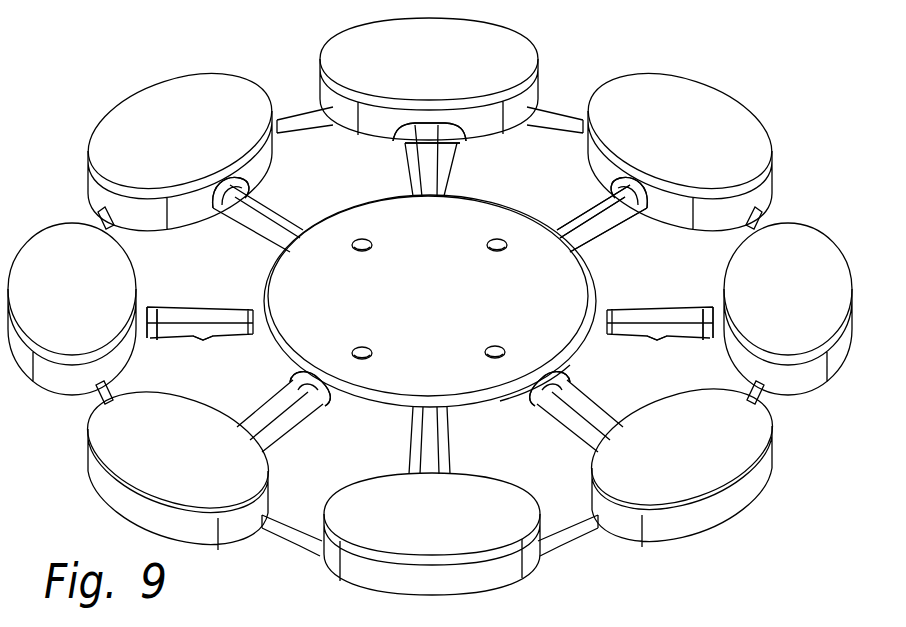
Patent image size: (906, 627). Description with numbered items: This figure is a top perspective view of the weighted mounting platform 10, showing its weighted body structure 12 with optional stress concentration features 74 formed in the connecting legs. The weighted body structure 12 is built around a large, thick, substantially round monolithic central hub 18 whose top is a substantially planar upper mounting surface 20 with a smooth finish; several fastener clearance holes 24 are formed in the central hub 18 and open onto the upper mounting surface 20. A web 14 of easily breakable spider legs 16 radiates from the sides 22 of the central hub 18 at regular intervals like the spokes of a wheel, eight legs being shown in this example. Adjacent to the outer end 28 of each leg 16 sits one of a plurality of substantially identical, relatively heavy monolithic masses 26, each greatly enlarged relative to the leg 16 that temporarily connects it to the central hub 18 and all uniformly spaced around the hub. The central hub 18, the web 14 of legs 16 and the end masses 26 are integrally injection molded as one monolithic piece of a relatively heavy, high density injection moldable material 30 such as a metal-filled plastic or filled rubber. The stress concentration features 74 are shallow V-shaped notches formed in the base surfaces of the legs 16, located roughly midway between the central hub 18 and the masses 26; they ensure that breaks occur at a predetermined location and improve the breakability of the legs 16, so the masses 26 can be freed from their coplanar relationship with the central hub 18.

The weighted mounting platform 10 is at (93, 66).
The weighted body structure 12 is at (769, 112).
The web 14 is at (566, 218).
The breakable spider legs 16 is at (293, 214).
The central hub 18 is at (357, 206).
The upper mounting surface 20 is at (466, 311).
The sides 22 is at (587, 362).
The fastener clearance holes 24 is at (356, 252).
The monolithic masses 26 is at (441, 68).
The outer end 28 is at (212, 210).
The high density injection moldable material 30 is at (745, 497).
The stress concentration features 74 is at (410, 188).